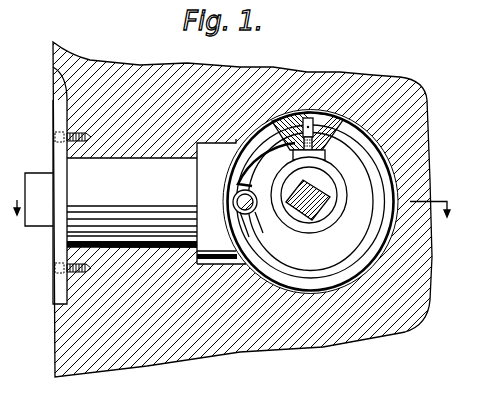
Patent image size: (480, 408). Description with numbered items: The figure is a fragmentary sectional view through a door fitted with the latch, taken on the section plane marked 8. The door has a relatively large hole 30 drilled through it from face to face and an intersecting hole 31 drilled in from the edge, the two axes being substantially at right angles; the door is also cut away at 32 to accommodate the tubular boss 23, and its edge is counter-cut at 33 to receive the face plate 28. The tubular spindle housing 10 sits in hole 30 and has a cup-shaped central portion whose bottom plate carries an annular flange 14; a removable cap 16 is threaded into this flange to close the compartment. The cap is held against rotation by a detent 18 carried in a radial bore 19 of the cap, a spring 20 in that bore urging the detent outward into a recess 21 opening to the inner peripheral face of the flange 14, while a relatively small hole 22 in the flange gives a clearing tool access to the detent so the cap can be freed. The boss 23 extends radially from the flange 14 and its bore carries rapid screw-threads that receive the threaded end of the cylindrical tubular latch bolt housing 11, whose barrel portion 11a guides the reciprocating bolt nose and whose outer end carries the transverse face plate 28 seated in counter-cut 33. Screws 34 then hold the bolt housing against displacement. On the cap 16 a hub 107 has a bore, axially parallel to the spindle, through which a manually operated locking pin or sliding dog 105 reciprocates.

The section line 8- 8 is at (230, 199).
The spindle housing 10 is at (338, 284).
The latch bolt housing 11 is at (88, 215).
The barrel portion 11a is at (152, 247).
The annular flange 14 is at (378, 166).
The removable cap 16 is at (360, 195).
The detent 18 is at (335, 120).
The radial bore 19 is at (318, 151).
The spring 20 is at (292, 150).
The recess 21 is at (302, 118).
The hole 22 is at (310, 125).
The tubular boss 23 is at (208, 157).
The face plate 28 is at (58, 160).
The hole 30 is at (375, 262).
The intersecting hole 31 is at (120, 249).
The cut-away 32 is at (220, 262).
The counter-cut 33 is at (55, 67).
The screws 34 is at (72, 268).
The locking pin 105 is at (250, 214).
The hub 107 is at (243, 183).